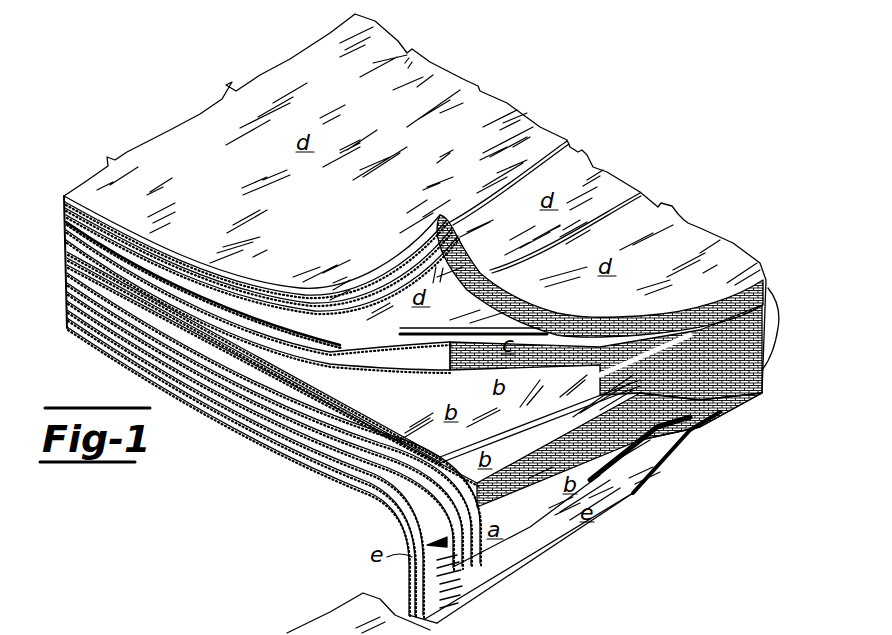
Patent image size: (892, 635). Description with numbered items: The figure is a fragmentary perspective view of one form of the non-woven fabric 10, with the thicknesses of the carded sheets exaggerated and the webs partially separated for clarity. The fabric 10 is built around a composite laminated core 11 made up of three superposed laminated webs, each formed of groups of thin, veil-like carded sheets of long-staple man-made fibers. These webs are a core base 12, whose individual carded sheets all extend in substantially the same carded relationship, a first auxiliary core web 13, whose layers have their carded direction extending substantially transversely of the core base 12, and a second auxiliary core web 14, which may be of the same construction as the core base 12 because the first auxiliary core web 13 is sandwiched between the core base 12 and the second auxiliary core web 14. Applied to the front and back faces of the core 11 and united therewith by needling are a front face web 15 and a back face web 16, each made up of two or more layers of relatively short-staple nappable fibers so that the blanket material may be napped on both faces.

The non-woven fabric 10 is at (522, 78).
The core 11 is at (792, 305).
The core base 12 is at (527, 557).
The first auxiliary core web 13 is at (542, 498).
The second auxiliary core web 14 is at (443, 391).
The front face web 15 is at (287, 48).
The back face web 16 is at (511, 604).